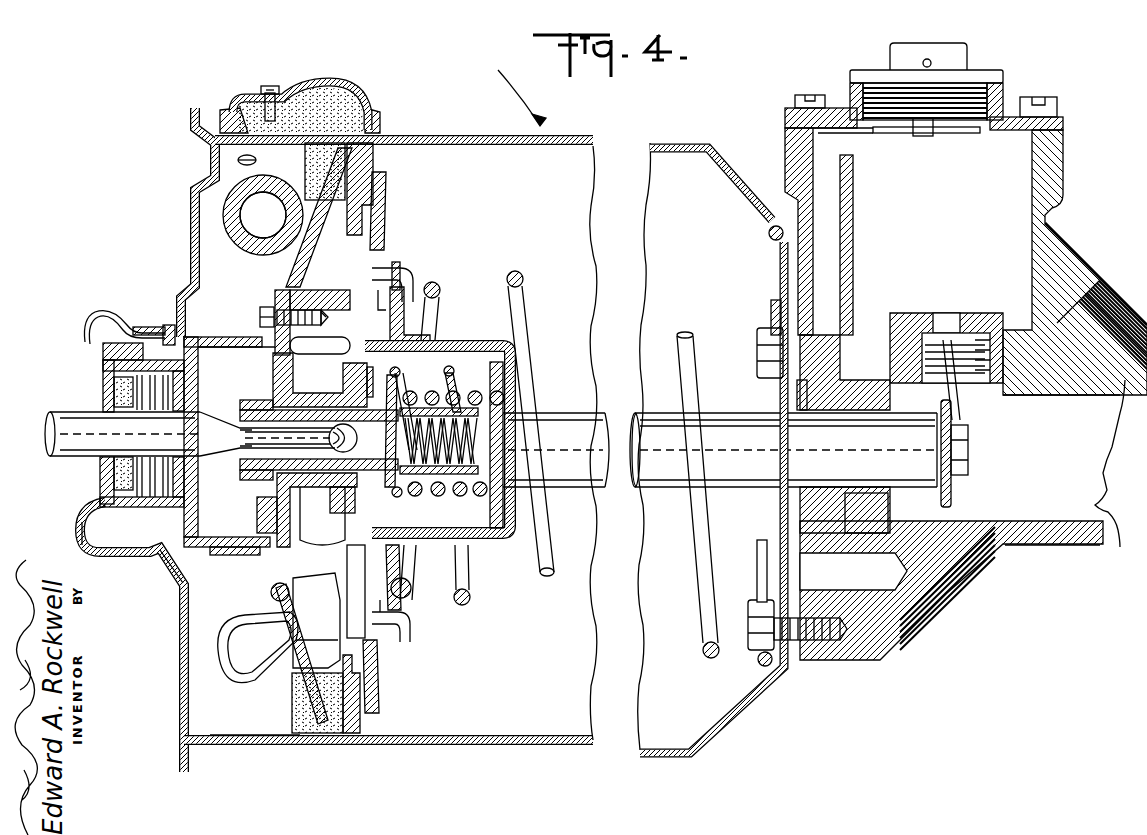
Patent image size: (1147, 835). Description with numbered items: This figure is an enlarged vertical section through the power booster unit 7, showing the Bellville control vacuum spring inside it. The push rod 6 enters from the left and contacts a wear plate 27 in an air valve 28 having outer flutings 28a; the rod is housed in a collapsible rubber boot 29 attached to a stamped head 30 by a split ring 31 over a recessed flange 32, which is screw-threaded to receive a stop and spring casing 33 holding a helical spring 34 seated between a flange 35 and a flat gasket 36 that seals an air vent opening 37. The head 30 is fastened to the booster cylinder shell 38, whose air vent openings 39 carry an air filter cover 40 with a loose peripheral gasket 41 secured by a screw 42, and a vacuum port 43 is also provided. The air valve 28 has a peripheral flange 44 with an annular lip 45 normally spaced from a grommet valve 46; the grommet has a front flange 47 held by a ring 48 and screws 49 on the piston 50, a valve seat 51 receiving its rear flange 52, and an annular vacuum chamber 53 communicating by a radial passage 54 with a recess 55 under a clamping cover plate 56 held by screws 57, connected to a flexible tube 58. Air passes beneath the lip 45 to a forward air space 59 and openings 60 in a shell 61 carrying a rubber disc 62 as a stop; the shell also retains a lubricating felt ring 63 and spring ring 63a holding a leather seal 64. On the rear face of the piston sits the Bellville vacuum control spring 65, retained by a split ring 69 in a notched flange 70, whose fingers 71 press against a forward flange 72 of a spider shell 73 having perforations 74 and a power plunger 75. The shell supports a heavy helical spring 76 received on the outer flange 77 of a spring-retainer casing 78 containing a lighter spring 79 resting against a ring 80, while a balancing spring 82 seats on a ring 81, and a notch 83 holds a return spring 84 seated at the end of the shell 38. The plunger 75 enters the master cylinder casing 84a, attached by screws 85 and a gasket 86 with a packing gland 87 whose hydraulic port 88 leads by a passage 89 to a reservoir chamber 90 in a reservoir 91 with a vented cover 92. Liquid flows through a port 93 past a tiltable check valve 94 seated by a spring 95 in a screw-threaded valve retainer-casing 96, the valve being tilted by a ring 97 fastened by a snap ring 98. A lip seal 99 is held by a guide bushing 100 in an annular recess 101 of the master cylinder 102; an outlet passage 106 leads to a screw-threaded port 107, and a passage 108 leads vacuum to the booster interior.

The push rod 6 is at (45, 430).
The booster unit 7 is at (479, 68).
The wear plate 27 is at (320, 538).
The air valve 28 is at (320, 380).
The outer flutings 28a is at (252, 450).
The collapsible rubber boot 29 is at (95, 316).
The stamped head 30 is at (191, 262).
The split ring 31 is at (168, 325).
The recessed flange 32 is at (148, 327).
The stop and spring casing 33 is at (110, 362).
The helical spring 34 is at (115, 513).
The flange 35 is at (186, 502).
The flat gasket 36 is at (112, 470).
The air vent opening 37 is at (112, 396).
The booster cylinder shell 38 is at (632, 751).
The air vent openings 39 is at (238, 158).
The air filter cover 40 is at (318, 85).
The loose peripheral gasket 41 is at (228, 110).
The screw 42 is at (268, 86).
The vacuum port 43 is at (225, 212).
The peripheral flange 44 is at (250, 412).
The annular lip 45 is at (250, 400).
The grommet valve 46 is at (255, 478).
The outwardly directed flange 47 is at (274, 381).
The ring 48 is at (245, 353).
The screws 49 is at (262, 307).
The piston 50 is at (375, 166).
The valve seat 51 is at (320, 327).
The rear flange 52 is at (326, 317).
The annular vacuum chamber 53 is at (260, 515).
The radial passage 54 is at (316, 620).
The recess 55 is at (317, 627).
The clamping cover plate 56 is at (278, 590).
The screws 57 is at (271, 594).
The flexible tube 58 is at (235, 665).
The forward air space 59 is at (242, 740).
The openings 60 is at (213, 549).
The shell 61 is at (195, 337).
The flexible rubber disc 62 is at (168, 565).
The lubricating felt ring 63 is at (292, 712).
The spring ring 63a is at (300, 195).
The piston ring leather seal 64 is at (305, 168).
The Bellville vacuum control spring 65 is at (386, 196).
The split ring 69 is at (398, 262).
The notched flange 70 is at (413, 270).
The fingers 71 is at (401, 284).
The forward flange 72 is at (411, 596).
The spider shell 73 is at (466, 340).
The perforations 74 is at (505, 384).
The power plunger 75 is at (650, 423).
The heavy helical spring 76 is at (458, 496).
The outer flange 77 is at (405, 400).
The spring-retainer casing 78 is at (455, 392).
The lighter spring 79 is at (392, 487).
The ring 80 is at (394, 496).
The ring 81 is at (357, 591).
The helical balancing spring 82 is at (415, 580).
The notch 83 is at (302, 280).
The helical return spring 84 is at (440, 288).
The master cylinder casing 84a is at (1036, 547).
The screws 85 is at (757, 353).
The gasket 86 is at (779, 308).
The packing gland 87 is at (797, 396).
The hydraulic port 88 is at (840, 363).
The passage 89 is at (805, 166).
The reservoir chamber 90 is at (926, 160).
The master cylinder reservoir 91 is at (1068, 166).
The vented cover 92 is at (890, 52).
The port 93 is at (946, 313).
The tiltable check valve 94 is at (975, 318).
The spring 95 is at (990, 360).
The valve block 96 is at (905, 315).
The ring 97 is at (955, 410).
The snap ring 98 is at (970, 449).
The lip seal 99 is at (866, 524).
The guide bushing 100 is at (903, 523).
The annular recess 101 is at (853, 571).
The master cylinder 102 is at (1119, 549).
The outlet passage 106 is at (1060, 376).
The screw-threaded port 107 is at (1108, 284).
The passage 108 is at (757, 567).